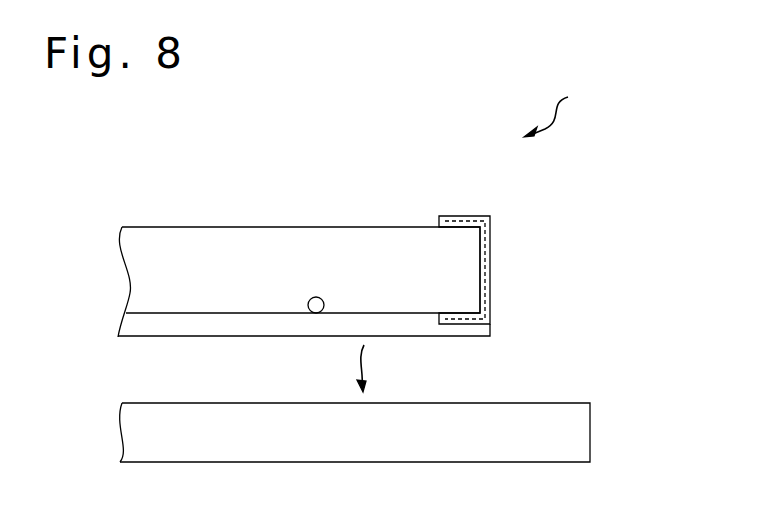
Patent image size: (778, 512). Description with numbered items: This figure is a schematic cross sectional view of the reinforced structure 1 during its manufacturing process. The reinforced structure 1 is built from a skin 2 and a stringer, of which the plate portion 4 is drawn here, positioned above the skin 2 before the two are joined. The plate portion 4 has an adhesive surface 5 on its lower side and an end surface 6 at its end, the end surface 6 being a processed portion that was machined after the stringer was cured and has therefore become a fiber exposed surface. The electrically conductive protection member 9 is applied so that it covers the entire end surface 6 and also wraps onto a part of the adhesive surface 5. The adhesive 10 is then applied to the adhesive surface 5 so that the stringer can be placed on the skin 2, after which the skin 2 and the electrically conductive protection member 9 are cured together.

The reinforced structure 1 is at (556, 92).
The skin 2 is at (584, 427).
The plate portion 4 is at (291, 245).
The adhesive surface 5 is at (316, 313).
The end surface 6 is at (480, 256).
The electrically conductive protection member 9 is at (467, 216).
The adhesive 10 is at (488, 332).